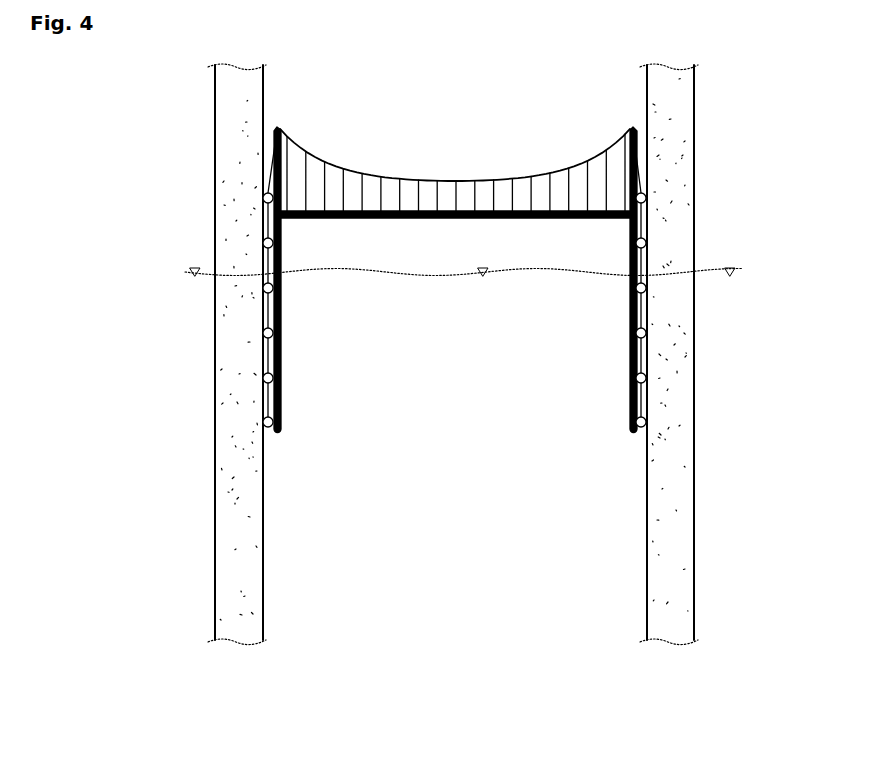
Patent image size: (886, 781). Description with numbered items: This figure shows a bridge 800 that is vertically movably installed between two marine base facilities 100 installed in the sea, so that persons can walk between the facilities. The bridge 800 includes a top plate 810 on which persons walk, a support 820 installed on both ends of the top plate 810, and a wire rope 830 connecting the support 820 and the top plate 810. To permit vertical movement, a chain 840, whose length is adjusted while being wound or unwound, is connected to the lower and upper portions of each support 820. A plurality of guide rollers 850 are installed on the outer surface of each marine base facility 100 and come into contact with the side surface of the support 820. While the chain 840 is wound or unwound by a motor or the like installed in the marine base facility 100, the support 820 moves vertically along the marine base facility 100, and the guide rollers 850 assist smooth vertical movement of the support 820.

The marine base facility 100 is at (263, 560).
The bridge 800 is at (461, 264).
The top plate 810 is at (443, 219).
The support 820 is at (282, 241).
The wire rope 830 is at (328, 173).
The chain 840 is at (272, 140).
The guide roller 850 is at (264, 200).